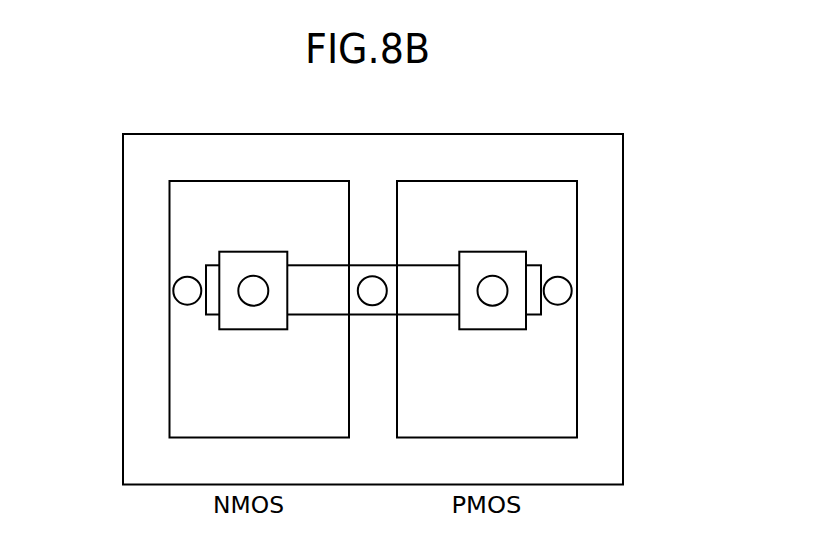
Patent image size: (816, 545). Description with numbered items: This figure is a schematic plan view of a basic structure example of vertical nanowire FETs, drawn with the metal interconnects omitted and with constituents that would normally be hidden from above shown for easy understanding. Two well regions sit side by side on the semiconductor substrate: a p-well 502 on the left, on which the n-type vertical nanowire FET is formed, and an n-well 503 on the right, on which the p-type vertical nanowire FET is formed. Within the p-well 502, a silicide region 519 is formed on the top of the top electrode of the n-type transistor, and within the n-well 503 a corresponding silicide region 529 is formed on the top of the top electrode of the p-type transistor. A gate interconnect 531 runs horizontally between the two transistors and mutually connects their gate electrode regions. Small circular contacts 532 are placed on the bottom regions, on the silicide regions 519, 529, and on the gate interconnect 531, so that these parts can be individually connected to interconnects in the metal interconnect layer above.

The p-well 502 is at (192, 410).
The n-well 503 is at (555, 410).
The silicide region 519 is at (247, 260).
The silicide region 529 is at (494, 260).
The gate interconnect 531 is at (318, 282).
The contacts 532 is at (176, 290).